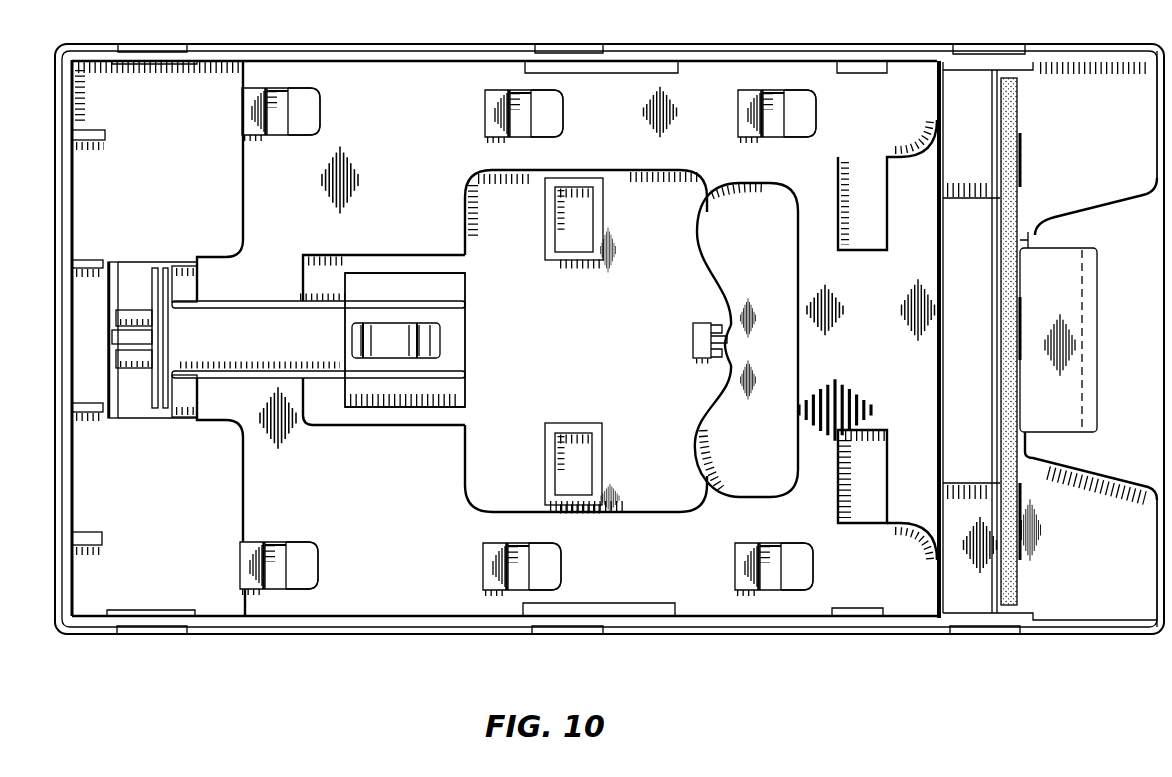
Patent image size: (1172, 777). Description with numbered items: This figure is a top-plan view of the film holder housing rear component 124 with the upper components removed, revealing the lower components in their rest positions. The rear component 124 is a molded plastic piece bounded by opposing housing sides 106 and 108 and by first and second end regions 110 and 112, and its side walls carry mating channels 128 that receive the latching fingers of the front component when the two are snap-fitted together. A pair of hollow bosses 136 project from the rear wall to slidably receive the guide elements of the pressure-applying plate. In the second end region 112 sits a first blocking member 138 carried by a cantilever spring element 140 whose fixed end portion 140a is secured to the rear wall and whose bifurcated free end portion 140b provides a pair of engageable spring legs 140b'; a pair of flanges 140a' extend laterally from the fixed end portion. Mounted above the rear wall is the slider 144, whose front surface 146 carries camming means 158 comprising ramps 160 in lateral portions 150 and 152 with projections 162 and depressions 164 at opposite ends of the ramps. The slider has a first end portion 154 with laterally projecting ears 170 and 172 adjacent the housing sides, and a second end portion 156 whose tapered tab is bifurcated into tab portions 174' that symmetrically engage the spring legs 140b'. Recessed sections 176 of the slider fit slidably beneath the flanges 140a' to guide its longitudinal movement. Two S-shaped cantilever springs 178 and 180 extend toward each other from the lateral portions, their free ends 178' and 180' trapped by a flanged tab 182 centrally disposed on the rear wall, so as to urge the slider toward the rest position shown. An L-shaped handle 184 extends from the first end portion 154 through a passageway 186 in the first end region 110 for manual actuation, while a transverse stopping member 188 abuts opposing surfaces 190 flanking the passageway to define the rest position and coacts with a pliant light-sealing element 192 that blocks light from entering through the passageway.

The housing side 106 is at (466, 636).
The housing side 108 is at (487, 47).
The first end region 110 is at (968, 636).
The second end region 112 is at (246, 636).
The rear component 124 is at (731, 650).
The mating channels 128 is at (146, 44).
The hollow bosses 136 is at (578, 270).
The first blocking member 138 is at (153, 338).
The cantilever spring element 140 is at (289, 346).
The fixed end portion 140a is at (444, 340).
The flanges 140a' is at (405, 344).
The free end portion 140b is at (134, 338).
The spring legs 140b' is at (199, 359).
The slider 144 is at (645, 85).
The front surface 146 is at (883, 344).
The lateral portion 150 is at (380, 600).
The lateral portion 152 is at (366, 72).
The first end portion 154 is at (887, 496).
The second end portion 156 is at (250, 483).
The camming means 158 is at (230, 129).
The ramps 160 is at (273, 127).
The projections 162 is at (248, 104).
The depressions 164 is at (312, 103).
The ear 170 is at (883, 616).
The ear 172 is at (880, 65).
The tapered tab portions 174' is at (209, 336).
The recessed sections 176 is at (455, 265).
The S-shaped cantilever spring 178 is at (717, 418).
The free end 178' is at (693, 371).
The S-shaped cantilever spring 180 is at (747, 261).
The free end 180' is at (690, 314).
The flanged tab 182 is at (693, 338).
The L-shaped handle 184 is at (1097, 330).
The passageway 186 is at (1022, 430).
The stopping member 188 is at (1005, 230).
The opposing surfaces 190 is at (996, 217).
The light-sealing element 192 is at (1010, 122).